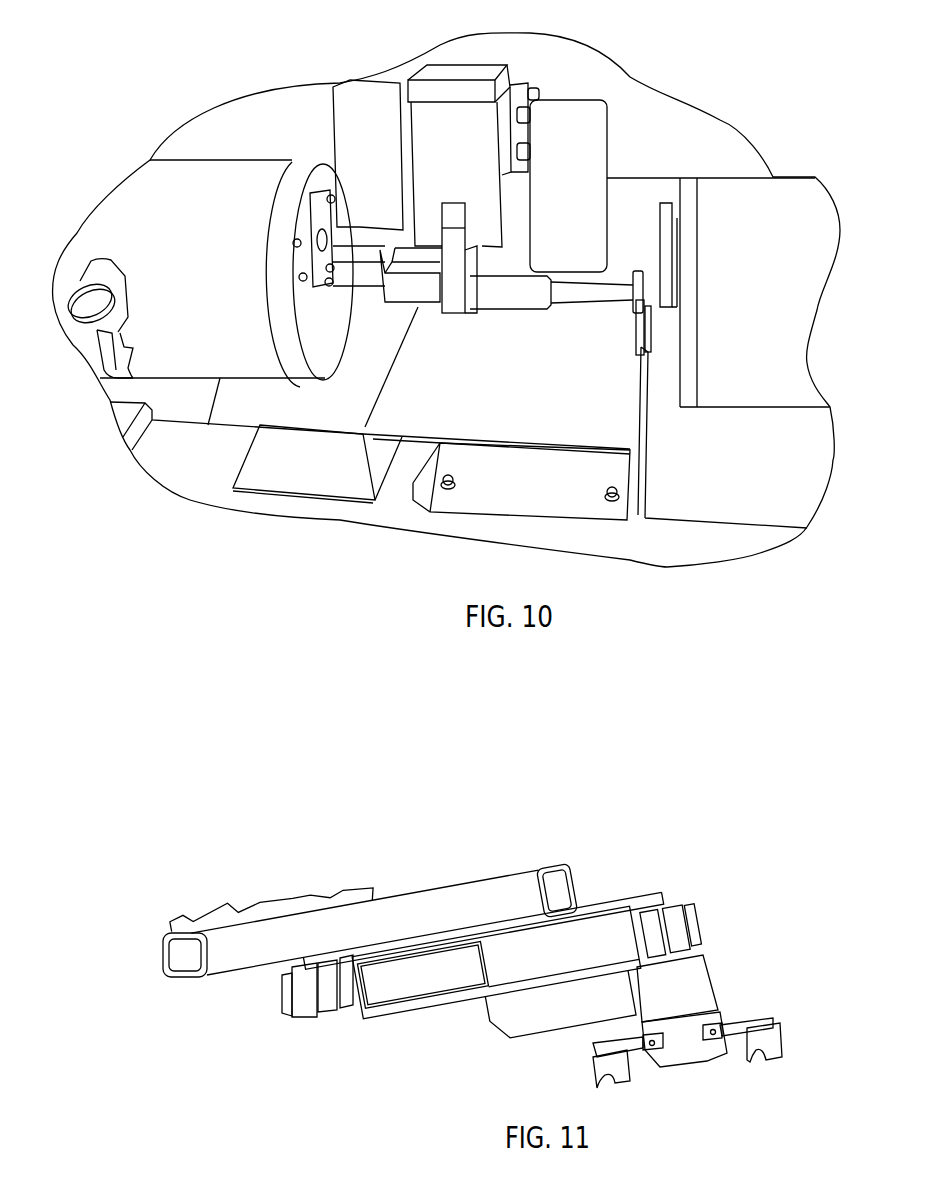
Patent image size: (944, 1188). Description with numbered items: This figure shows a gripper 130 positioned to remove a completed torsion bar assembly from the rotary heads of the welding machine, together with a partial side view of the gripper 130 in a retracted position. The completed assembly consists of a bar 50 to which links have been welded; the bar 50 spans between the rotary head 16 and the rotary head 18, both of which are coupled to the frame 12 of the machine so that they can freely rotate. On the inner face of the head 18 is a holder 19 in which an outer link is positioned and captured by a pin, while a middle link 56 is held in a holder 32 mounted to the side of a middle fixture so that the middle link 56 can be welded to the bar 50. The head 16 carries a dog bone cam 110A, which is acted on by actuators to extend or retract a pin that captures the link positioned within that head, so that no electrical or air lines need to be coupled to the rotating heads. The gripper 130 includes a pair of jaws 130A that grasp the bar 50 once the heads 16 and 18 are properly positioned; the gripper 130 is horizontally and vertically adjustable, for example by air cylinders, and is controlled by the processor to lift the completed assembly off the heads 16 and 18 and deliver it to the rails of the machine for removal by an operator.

In FIG. 11, the frame 12 is at (352, 886).
In FIG. 10, the rotary head 16 is at (248, 170).
In FIG. 10, the rotary head 18 is at (748, 183).
In FIG. 10, the holder 19 is at (662, 222).
In FIG. 10, the holder 32 is at (648, 328).
In FIG. 10, the bar 50 is at (578, 283).
In FIG. 10, the middle link 56 is at (628, 312).
In FIG. 10, the dog bone cam 110A is at (87, 310).
In FIG. 10, the gripper 130 is at (533, 68).
In FIG. 11, the gripper 130 is at (699, 860).
In FIG. 10, the jaws 130A is at (415, 265).
In FIG. 11, the jaws 130A is at (600, 1039).